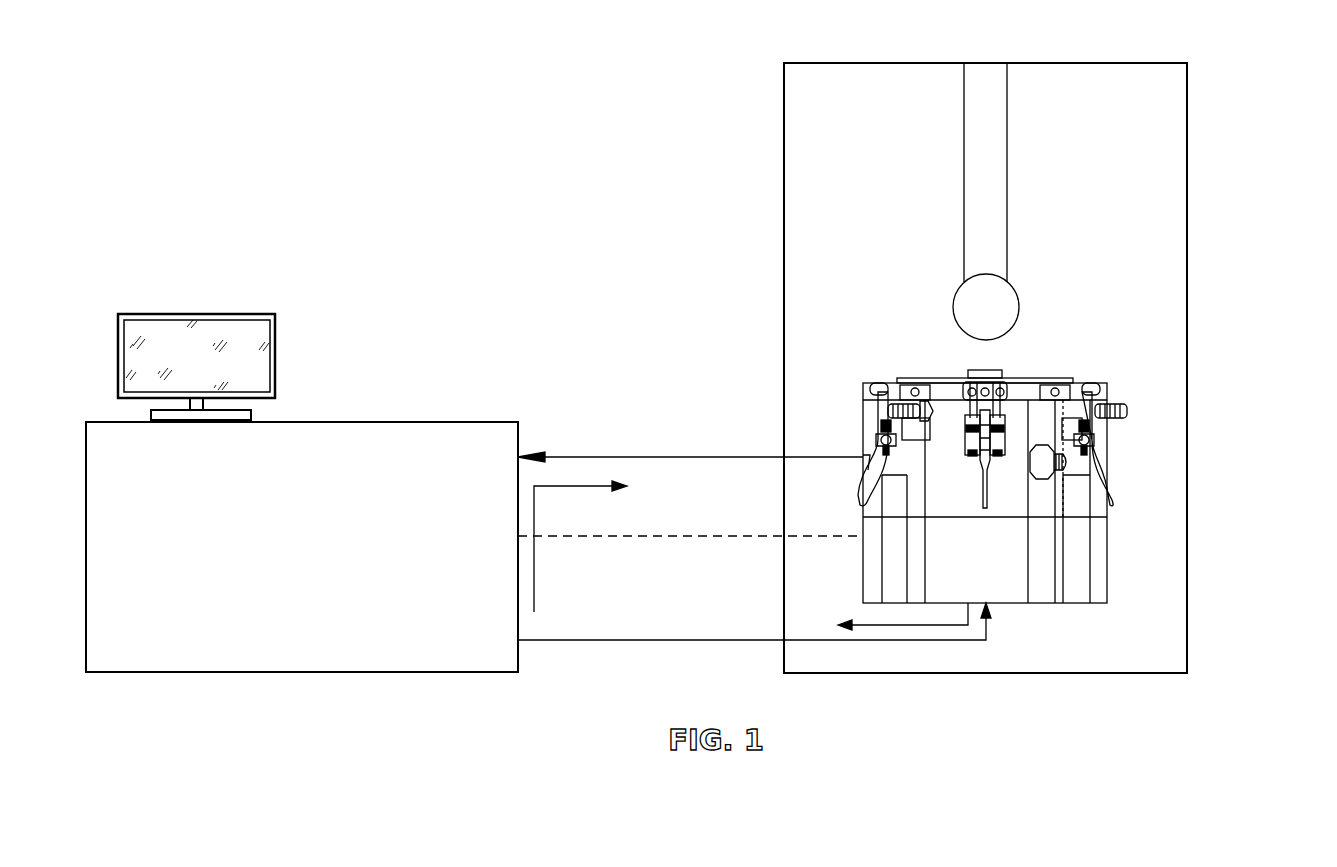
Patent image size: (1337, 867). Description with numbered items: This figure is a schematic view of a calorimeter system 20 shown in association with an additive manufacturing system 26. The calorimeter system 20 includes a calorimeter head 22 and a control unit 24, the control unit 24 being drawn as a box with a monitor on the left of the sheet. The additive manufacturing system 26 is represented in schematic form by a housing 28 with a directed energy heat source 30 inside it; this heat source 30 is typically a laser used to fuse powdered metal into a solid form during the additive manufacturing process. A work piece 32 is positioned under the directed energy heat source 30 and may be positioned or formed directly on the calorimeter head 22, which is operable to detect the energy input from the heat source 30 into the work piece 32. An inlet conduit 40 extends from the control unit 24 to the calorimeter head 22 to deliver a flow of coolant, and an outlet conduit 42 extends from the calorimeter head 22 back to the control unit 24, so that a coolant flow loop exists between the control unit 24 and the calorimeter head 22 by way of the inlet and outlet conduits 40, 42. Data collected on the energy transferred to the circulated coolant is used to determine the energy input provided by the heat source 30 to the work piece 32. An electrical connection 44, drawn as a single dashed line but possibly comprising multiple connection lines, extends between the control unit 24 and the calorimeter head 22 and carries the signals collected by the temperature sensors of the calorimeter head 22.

The calorimeter system 20 is at (585, 326).
The calorimeter head 22 is at (1107, 558).
The control unit 24 is at (483, 421).
The additive manufacturing system 26 is at (1218, 162).
The housing 28 is at (1187, 232).
The directed energy heat source 30 is at (1007, 92).
The work piece 32 is at (985, 370).
The inlet conduit 40 is at (623, 457).
The outlet conduit 42 is at (623, 640).
The electrical connection 44 is at (658, 536).